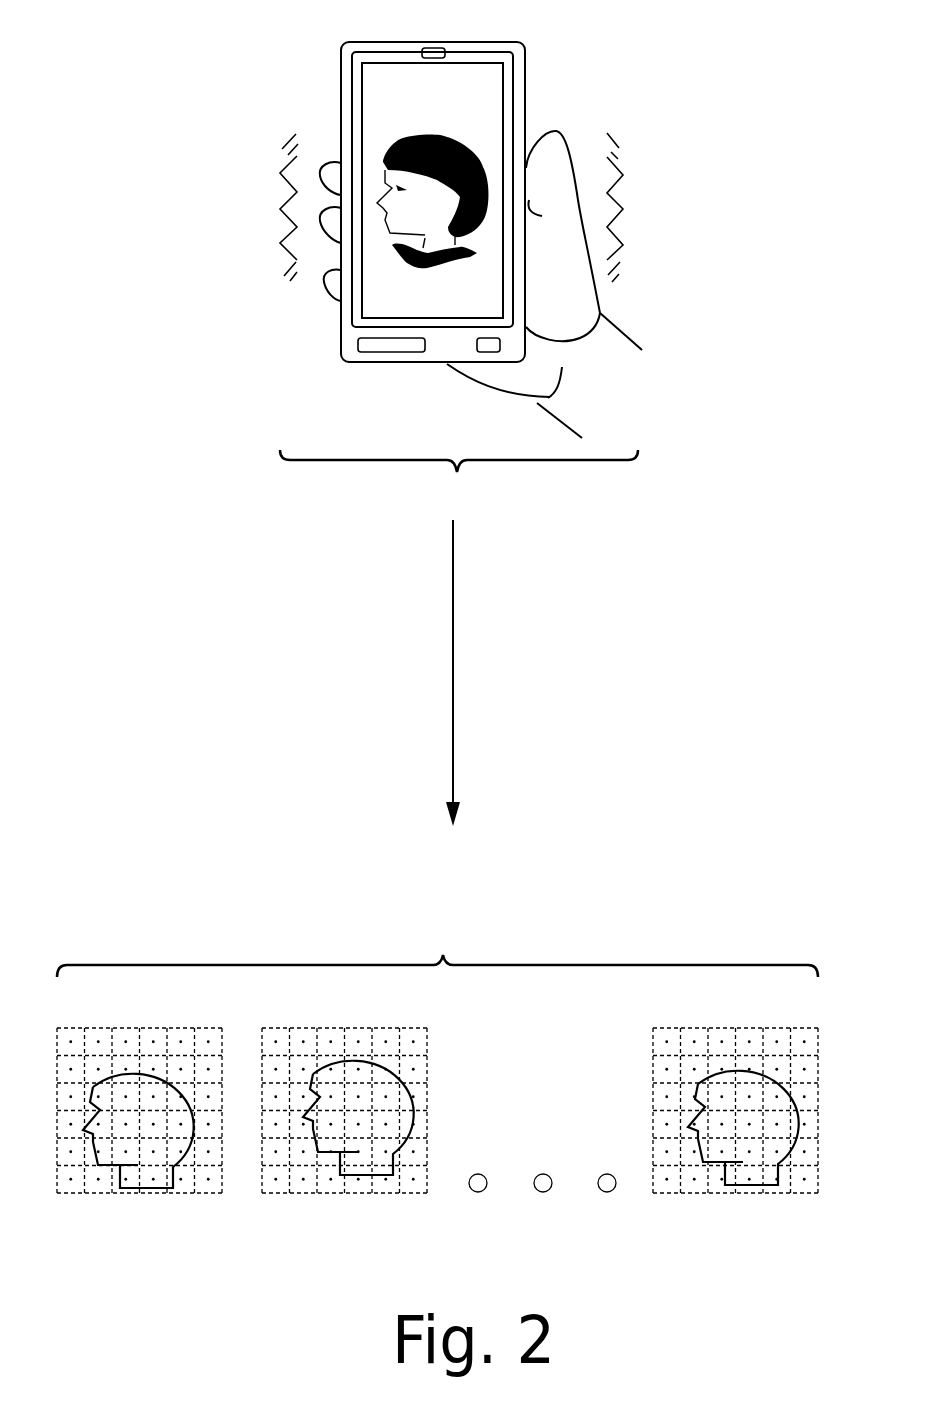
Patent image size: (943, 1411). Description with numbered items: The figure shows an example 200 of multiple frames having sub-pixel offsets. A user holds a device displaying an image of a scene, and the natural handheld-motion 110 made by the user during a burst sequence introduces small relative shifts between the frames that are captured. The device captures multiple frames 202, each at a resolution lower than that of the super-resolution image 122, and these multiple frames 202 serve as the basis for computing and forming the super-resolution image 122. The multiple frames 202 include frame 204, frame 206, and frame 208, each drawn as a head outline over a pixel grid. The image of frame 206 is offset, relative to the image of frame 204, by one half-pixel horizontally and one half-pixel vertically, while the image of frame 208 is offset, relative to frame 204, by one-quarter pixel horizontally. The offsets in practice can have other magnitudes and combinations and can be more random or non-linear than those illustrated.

The example implementation of multi-frame image capture 200 is at (161, 33).
The natural handheld-motion 110 is at (441, 503).
The super-resolution image 122 is at (489, 121).
The multiple frames 202 is at (433, 918).
The frame 204 is at (85, 1028).
The frame 206 is at (291, 1028).
The frame 208 is at (682, 1028).